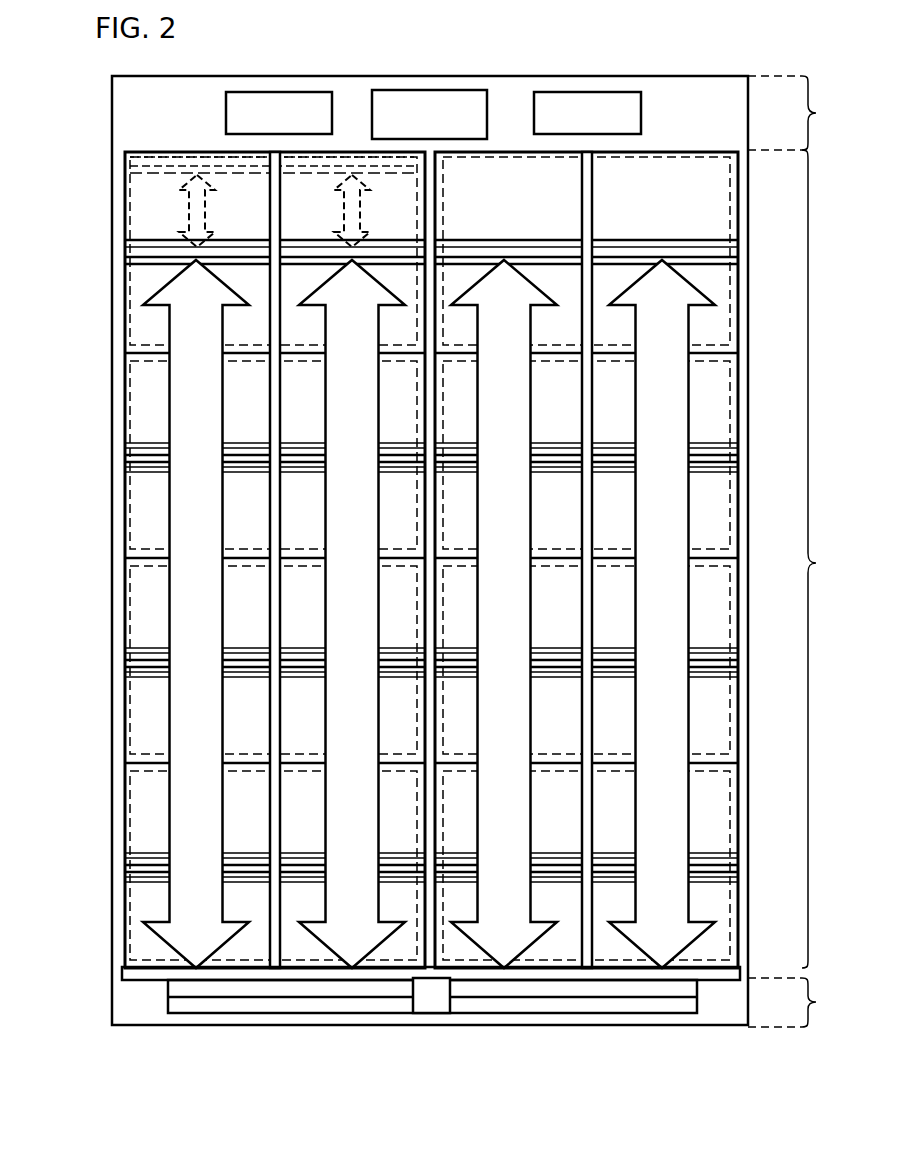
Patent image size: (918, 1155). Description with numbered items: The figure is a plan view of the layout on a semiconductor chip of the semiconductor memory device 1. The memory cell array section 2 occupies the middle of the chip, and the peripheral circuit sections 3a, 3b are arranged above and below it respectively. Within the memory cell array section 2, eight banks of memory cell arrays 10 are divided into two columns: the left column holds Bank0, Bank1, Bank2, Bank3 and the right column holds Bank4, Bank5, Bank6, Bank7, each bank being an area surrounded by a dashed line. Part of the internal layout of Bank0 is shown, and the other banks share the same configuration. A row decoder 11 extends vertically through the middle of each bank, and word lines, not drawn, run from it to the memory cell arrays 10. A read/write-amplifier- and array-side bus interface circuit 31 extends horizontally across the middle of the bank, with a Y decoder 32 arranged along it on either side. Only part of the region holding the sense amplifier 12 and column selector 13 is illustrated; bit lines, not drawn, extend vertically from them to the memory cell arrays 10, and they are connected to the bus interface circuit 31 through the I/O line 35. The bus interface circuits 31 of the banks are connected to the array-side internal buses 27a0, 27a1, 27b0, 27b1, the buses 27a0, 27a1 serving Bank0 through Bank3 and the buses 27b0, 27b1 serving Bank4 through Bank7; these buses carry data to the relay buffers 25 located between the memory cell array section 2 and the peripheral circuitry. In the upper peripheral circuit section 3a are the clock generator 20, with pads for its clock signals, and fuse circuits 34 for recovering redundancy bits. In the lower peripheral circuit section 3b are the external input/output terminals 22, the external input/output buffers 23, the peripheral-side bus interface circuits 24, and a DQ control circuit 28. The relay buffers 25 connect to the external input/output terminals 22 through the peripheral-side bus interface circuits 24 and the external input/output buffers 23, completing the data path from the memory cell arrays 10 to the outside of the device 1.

The semiconductor memory device 1 is at (340, 1030).
The memory cell array section 2 is at (475, 559).
The peripheral circuit section 3a is at (792, 113).
The peripheral circuit section 3b is at (792, 1002).
The memory cell array 10 is at (140, 161).
The row decoder 11 is at (278, 197).
The sense amplifier 12 is at (228, 179).
The column selector 13 is at (158, 170).
The clock generator 20 is at (372, 118).
The external input/output terminal 22 is at (193, 1002).
The external input/output buffer 23 is at (375, 997).
The peripheral-side bus interface circuit 24 is at (181, 988).
The relay buffer 25 is at (133, 977).
The array-side internal bus 27a0 is at (196, 373).
The array-side internal bus 27a1 is at (352, 397).
The array-side internal bus 27b0 is at (512, 383).
The array-side internal bus 27b1 is at (670, 377).
The DQ control circuit 28 is at (430, 1003).
The read/write-amplifier- and array-side bus interface circuit 31 is at (722, 257).
The Y decoder 32 is at (726, 241).
The fuse circuit 34 is at (226, 117).
The I/O line 35 is at (186, 219).
The bank 0 Bank0 is at (130, 324).
The bank 1 Bank1 is at (130, 517).
The bank 2 Bank2 is at (130, 732).
The bank 3 Bank3 is at (130, 934).
The bank 4 Bank4 is at (730, 322).
The bank 5 Bank5 is at (730, 529).
The bank 6 Bank6 is at (730, 731).
The bank 7 Bank7 is at (730, 934).